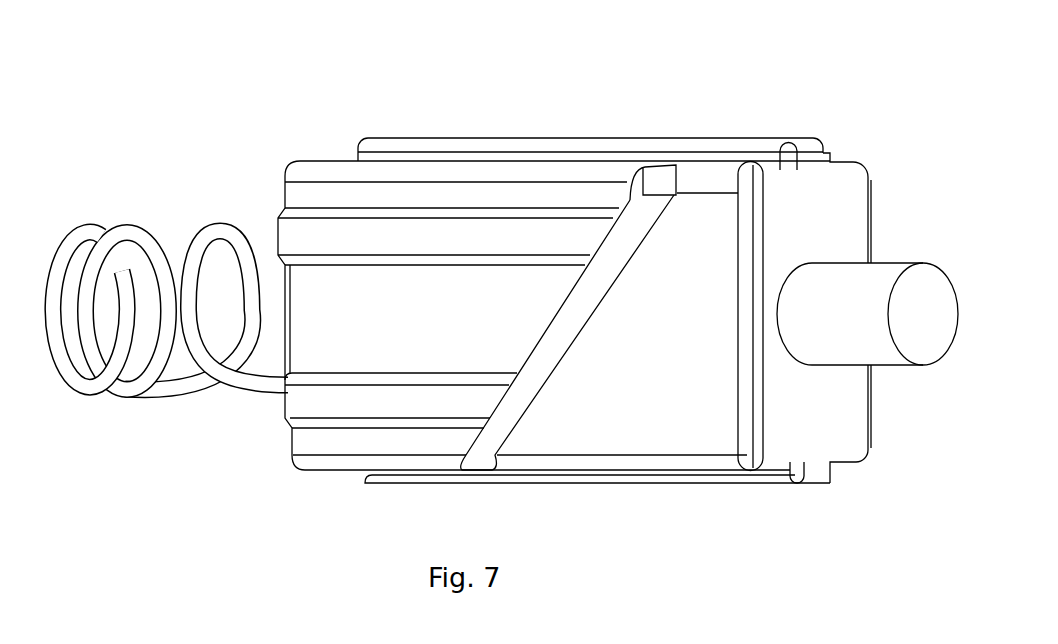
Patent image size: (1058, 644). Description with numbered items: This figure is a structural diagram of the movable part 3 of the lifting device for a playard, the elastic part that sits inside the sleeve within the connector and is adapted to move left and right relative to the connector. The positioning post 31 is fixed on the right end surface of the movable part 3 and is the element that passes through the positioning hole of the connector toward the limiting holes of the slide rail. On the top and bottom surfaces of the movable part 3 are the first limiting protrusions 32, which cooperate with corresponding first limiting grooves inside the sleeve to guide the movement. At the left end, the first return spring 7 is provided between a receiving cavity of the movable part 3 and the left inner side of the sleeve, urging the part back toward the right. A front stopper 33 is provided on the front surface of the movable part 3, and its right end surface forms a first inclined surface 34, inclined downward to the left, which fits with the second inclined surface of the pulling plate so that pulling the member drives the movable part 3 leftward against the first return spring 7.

The movable part 3 is at (622, 290).
The first return spring 7 is at (158, 265).
The positioning post 31 is at (862, 298).
The first limiting protrusion 32 is at (767, 150).
The front stopper 33 is at (402, 342).
The first inclined surface 34 is at (558, 337).